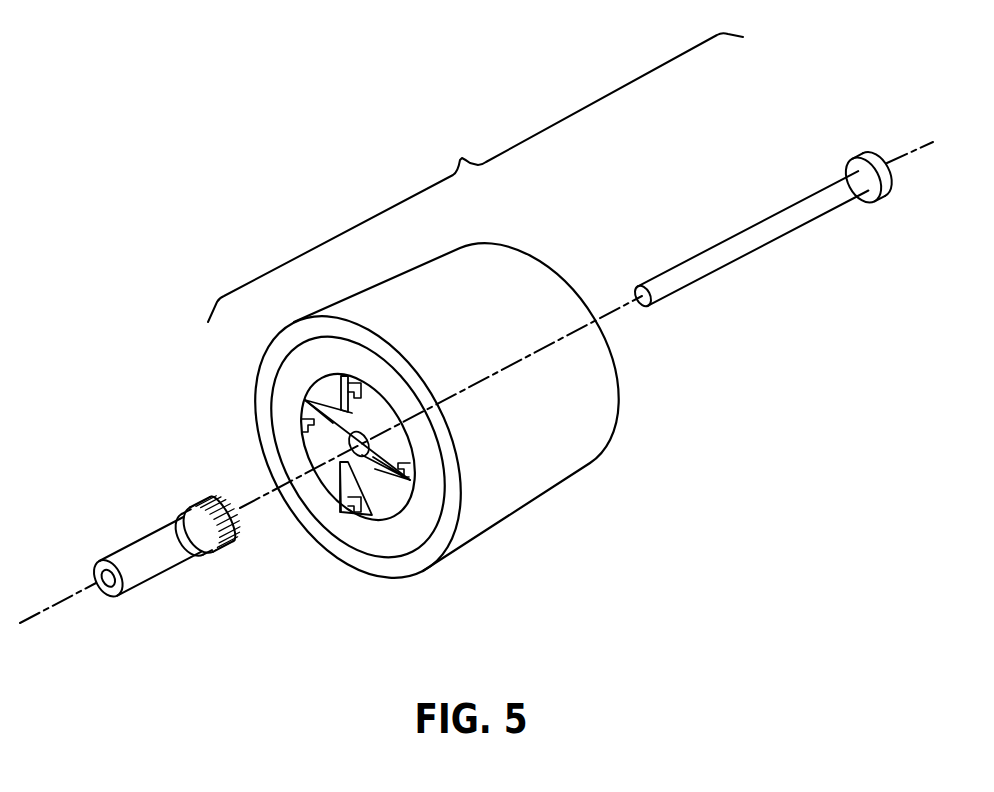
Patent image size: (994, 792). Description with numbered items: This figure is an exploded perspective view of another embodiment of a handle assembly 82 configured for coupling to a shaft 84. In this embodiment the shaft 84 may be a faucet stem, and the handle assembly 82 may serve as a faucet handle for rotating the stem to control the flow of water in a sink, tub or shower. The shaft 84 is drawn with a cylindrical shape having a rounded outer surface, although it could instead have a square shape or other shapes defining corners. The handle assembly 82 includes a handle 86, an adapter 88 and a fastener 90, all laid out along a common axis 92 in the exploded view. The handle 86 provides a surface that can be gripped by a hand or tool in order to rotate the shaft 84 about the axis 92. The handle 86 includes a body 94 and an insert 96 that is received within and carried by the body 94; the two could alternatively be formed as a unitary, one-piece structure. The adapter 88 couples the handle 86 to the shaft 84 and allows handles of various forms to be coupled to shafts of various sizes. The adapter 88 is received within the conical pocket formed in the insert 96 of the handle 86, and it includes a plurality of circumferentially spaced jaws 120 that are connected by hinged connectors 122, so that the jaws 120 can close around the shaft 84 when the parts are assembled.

The handle assembly 82 is at (475, 177).
The shaft 84 is at (140, 538).
The handle 86 is at (593, 483).
The adapter 88 is at (385, 489).
The fastener 90 is at (763, 246).
The axis 92 is at (58, 604).
The body 94 is at (276, 352).
The insert 96 is at (292, 380).
The jaws 120 is at (303, 437).
The hinged connectors 122 is at (303, 467).